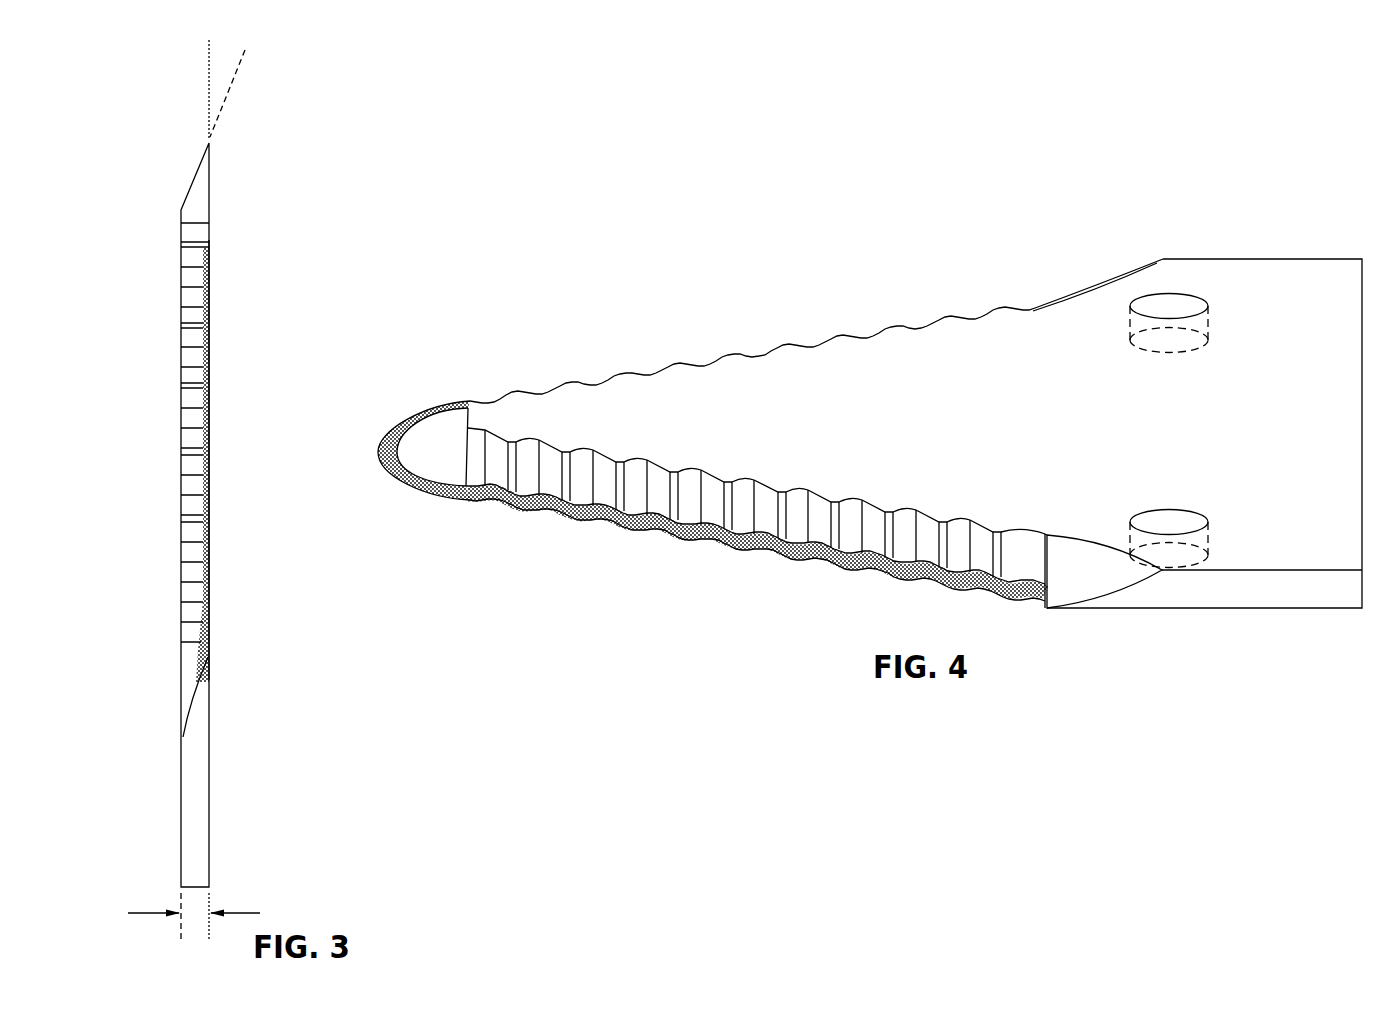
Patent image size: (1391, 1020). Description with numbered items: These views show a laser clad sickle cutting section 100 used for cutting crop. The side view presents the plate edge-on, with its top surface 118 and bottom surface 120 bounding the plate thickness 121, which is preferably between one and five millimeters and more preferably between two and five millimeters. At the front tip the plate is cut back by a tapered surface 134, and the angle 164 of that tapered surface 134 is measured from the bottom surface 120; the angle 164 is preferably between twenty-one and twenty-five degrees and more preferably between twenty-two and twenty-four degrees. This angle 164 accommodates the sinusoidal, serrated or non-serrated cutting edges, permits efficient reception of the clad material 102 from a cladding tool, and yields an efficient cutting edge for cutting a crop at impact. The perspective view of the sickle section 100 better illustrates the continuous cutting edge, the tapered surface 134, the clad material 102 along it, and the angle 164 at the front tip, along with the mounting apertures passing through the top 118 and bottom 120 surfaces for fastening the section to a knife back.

In FIG. 3, the sickle cutting section 100 is at (314, 127).
In FIG. 4, the sickle cutting section 100 is at (745, 176).
In FIG. 3, the clad material 102 is at (210, 295).
In FIG. 3, the top surface 118 is at (180, 493).
In FIG. 3, the bottom surface 120 is at (208, 394).
In FIG. 3, the plate thickness 121 is at (136, 913).
In FIG. 4, the tapered surface 134 is at (441, 457).
In FIG. 3, the angle 164 is at (275, 110).